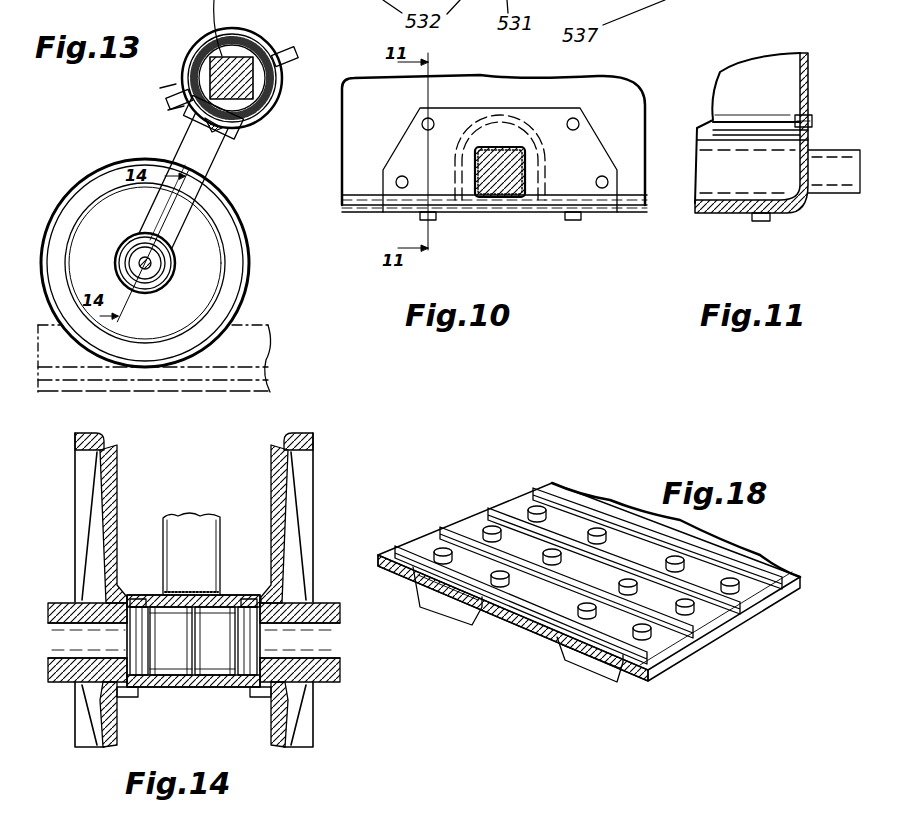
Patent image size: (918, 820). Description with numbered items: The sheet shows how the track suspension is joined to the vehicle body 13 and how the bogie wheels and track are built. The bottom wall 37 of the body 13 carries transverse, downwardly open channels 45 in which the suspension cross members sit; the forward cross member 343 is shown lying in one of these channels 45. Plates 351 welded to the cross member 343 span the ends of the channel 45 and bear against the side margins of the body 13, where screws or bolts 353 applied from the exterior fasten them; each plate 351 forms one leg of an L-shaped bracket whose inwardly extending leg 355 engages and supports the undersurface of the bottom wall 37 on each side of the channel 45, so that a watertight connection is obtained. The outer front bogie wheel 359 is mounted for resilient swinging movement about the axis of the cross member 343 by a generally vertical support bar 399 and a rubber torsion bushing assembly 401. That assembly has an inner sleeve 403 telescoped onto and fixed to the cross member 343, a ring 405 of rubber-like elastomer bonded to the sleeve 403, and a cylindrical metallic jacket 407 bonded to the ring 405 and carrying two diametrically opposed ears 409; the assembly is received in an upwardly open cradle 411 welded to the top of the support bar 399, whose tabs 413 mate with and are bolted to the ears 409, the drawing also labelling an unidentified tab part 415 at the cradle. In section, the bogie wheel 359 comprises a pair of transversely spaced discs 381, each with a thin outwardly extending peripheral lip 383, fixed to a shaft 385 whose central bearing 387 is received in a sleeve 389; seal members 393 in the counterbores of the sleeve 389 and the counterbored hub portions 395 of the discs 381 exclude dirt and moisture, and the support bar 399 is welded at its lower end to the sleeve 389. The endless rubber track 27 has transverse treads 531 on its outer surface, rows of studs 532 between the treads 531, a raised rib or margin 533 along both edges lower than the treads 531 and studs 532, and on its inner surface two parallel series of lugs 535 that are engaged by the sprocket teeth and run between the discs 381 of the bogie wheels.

In FIG. 10, the body 13 is at (597, 88).
In FIG. 11, the body 13 is at (810, 68).
In FIG. 13, the tracks 27 is at (247, 364).
In FIG. 18, the tracks 27 is at (465, 520).
In FIG. 11, the bottom wall 37 is at (722, 214).
In FIG. 10, the channels 45 is at (530, 137).
In FIG. 11, the channels 45 is at (752, 120).
In FIG. 10, the cross member 343 is at (503, 213).
In FIG. 11, the cross member 343 is at (833, 185).
In FIG. 10, the plates 351 is at (580, 148).
In FIG. 11, the plates 351 is at (810, 137).
In FIG. 10, the screws or bolts 353 is at (402, 176).
In FIG. 11, the screws or bolts 353 is at (813, 120).
In FIG. 10, the inwardly extending leg 355 is at (603, 220).
In FIG. 11, the inwardly extending leg 355 is at (775, 221).
In FIG. 13, the outer front bogie wheel 359 is at (233, 298).
In FIG. 14, the outer front bogie wheel 359 is at (328, 521).
In FIG. 14, the discs 381 is at (118, 480).
In FIG. 13, the peripheral lip 383 is at (233, 231).
In FIG. 14, the peripheral lip 383 is at (76, 439).
In FIG. 13, the axle 385 is at (157, 275).
In FIG. 14, the axle 385 is at (322, 645).
In FIG. 14, the bearing 387 is at (204, 680).
In FIG. 13, the sleeve 389 is at (160, 263).
In FIG. 14, the sleeve 389 is at (222, 690).
In FIG. 14, the seal member 393 is at (140, 595).
In FIG. 14, the hub portion 395 is at (131, 698).
In FIG. 13, the support bar 399 is at (202, 172).
In FIG. 14, the support bar 399 is at (185, 523).
In FIG. 13, the rubber torsion bushing assembly 401 is at (260, 100).
In FIG. 13, the inner sleeve 403 is at (250, 126).
In FIG. 13, the ring 405 is at (272, 82).
In FIG. 13, the metallic jacket 407 is at (222, 64).
In FIG. 13, the ears 409 is at (297, 50).
In FIG. 13, the cradle 411 is at (278, 112).
In FIG. 13, the tabs 413 is at (162, 113).
In FIG. 13, the ear face 415 is at (162, 90).
In FIG. 18, the transverse treads 531 is at (548, 540).
In FIG. 18, the studs 532 is at (580, 612).
In FIG. 18, the rib or margin 533 is at (512, 496).
In FIG. 18, the lugs 535 is at (458, 611).